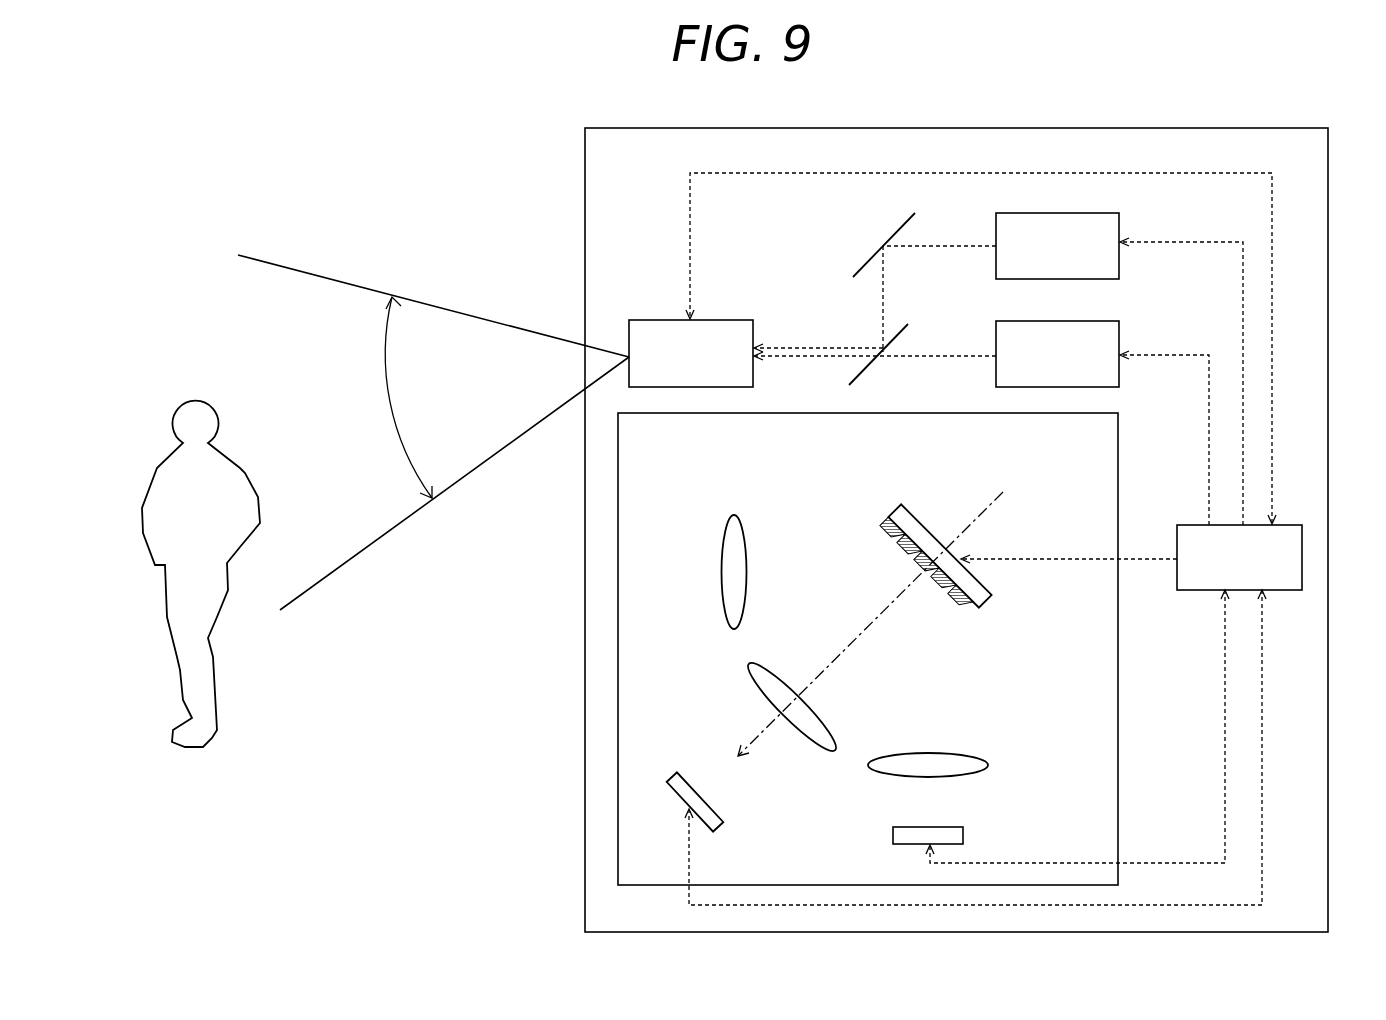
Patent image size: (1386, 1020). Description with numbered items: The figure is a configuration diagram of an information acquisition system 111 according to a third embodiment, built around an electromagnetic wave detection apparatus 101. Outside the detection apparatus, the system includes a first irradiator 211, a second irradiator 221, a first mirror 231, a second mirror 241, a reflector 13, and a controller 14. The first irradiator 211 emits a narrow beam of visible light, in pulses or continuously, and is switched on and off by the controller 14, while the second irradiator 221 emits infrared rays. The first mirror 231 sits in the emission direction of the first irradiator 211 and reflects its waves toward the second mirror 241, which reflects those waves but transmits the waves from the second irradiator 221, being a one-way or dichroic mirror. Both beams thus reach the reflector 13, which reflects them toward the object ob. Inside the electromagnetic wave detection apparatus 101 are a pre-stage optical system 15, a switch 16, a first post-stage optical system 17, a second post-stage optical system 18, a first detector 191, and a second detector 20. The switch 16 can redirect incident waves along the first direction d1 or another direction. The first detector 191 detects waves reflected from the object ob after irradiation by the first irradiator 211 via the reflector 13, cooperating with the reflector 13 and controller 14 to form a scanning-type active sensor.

The information acquisition system 111 is at (583, 175).
The electromagnetic wave detection apparatus 101 is at (616, 459).
The reflector 13 is at (659, 320).
The first mirror 231 is at (886, 238).
The second mirror 241 is at (864, 375).
The first irradiator 211 is at (1120, 222).
The second irradiator 221 is at (1120, 331).
The controller 14 is at (1193, 592).
The pre-stage optical system 15 is at (732, 515).
The switch 16 is at (936, 524).
The first post-stage optical system 17 is at (751, 668).
The second post-stage optical system 18 is at (988, 766).
The second detector 20 is at (964, 835).
The first detector 191 is at (725, 825).
The first direction d1 is at (855, 640).
The object ob is at (238, 488).